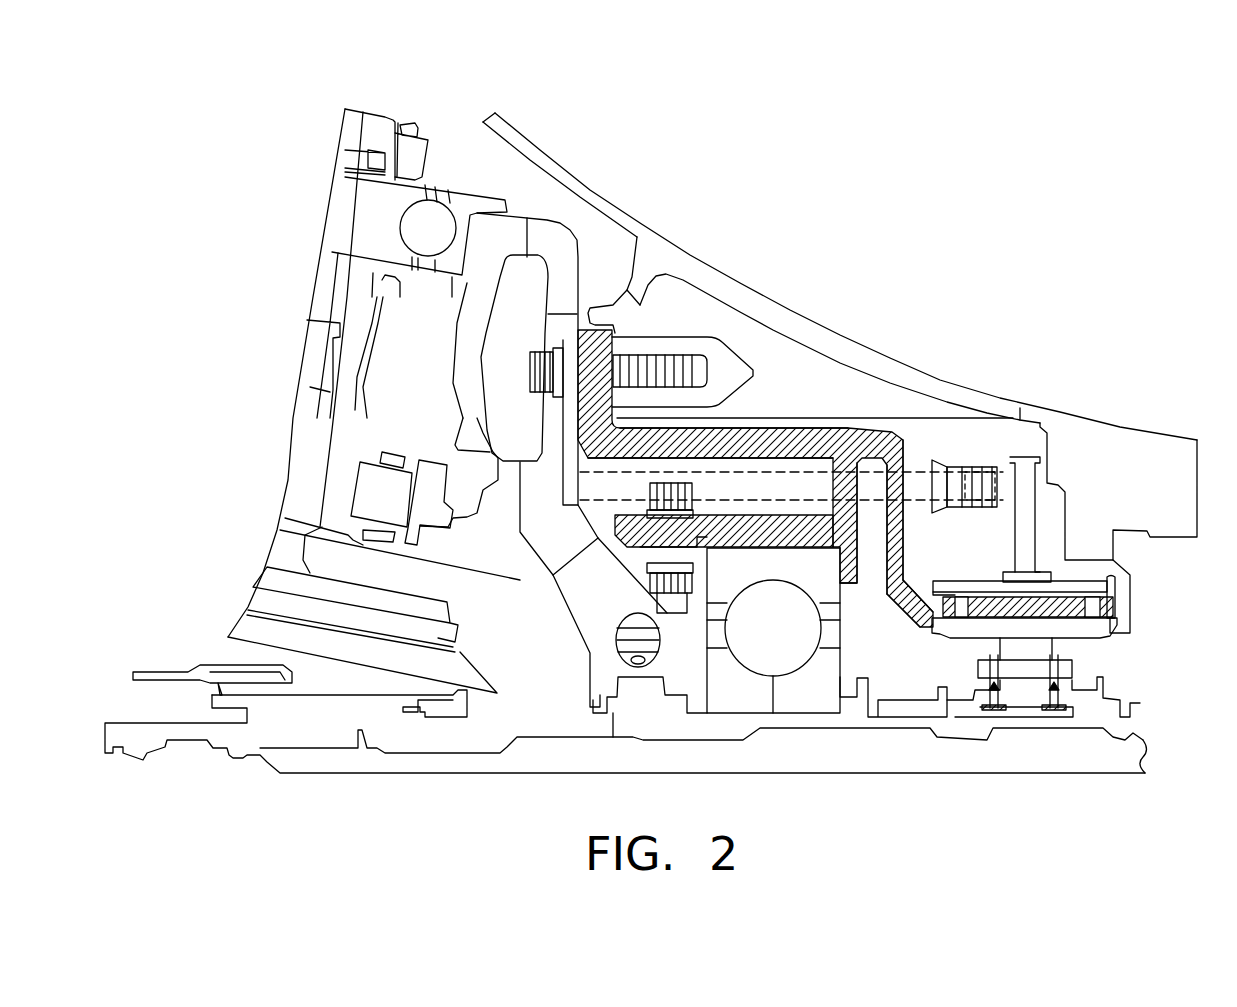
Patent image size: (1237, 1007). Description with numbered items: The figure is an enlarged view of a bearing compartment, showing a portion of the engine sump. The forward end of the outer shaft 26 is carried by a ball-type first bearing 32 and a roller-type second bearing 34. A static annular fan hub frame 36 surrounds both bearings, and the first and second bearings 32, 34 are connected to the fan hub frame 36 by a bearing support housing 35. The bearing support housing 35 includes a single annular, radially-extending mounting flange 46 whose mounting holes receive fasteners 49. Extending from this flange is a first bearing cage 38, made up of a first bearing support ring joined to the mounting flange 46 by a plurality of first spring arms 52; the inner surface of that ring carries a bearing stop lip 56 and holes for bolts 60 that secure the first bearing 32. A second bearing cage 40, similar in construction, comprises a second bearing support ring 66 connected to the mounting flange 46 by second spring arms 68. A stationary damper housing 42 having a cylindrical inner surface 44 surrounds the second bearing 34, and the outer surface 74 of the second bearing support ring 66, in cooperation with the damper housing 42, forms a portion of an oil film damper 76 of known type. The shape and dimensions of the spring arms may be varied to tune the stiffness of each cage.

The outer shaft 26 is at (675, 758).
The first bearing 32 is at (843, 647).
The second bearing 34 is at (1090, 668).
The bearing support housing 35 is at (905, 433).
The fan hub frame 36 is at (652, 257).
The first bearing cage 38 is at (763, 518).
The second bearing cage 40 is at (918, 612).
The damper housing 42 is at (1120, 573).
The cylindrical inner surface 44 is at (1067, 590).
The mounting flange 46 is at (593, 337).
The fasteners 49 is at (625, 360).
The first spring arms 52 is at (742, 437).
The bearing stop lip 56 is at (847, 580).
The bolts 60 is at (680, 598).
The second bearing support ring 66 is at (1097, 610).
The second spring arms 68 is at (863, 437).
The outer surface 74 is at (988, 598).
The oil film damper 76 is at (933, 575).